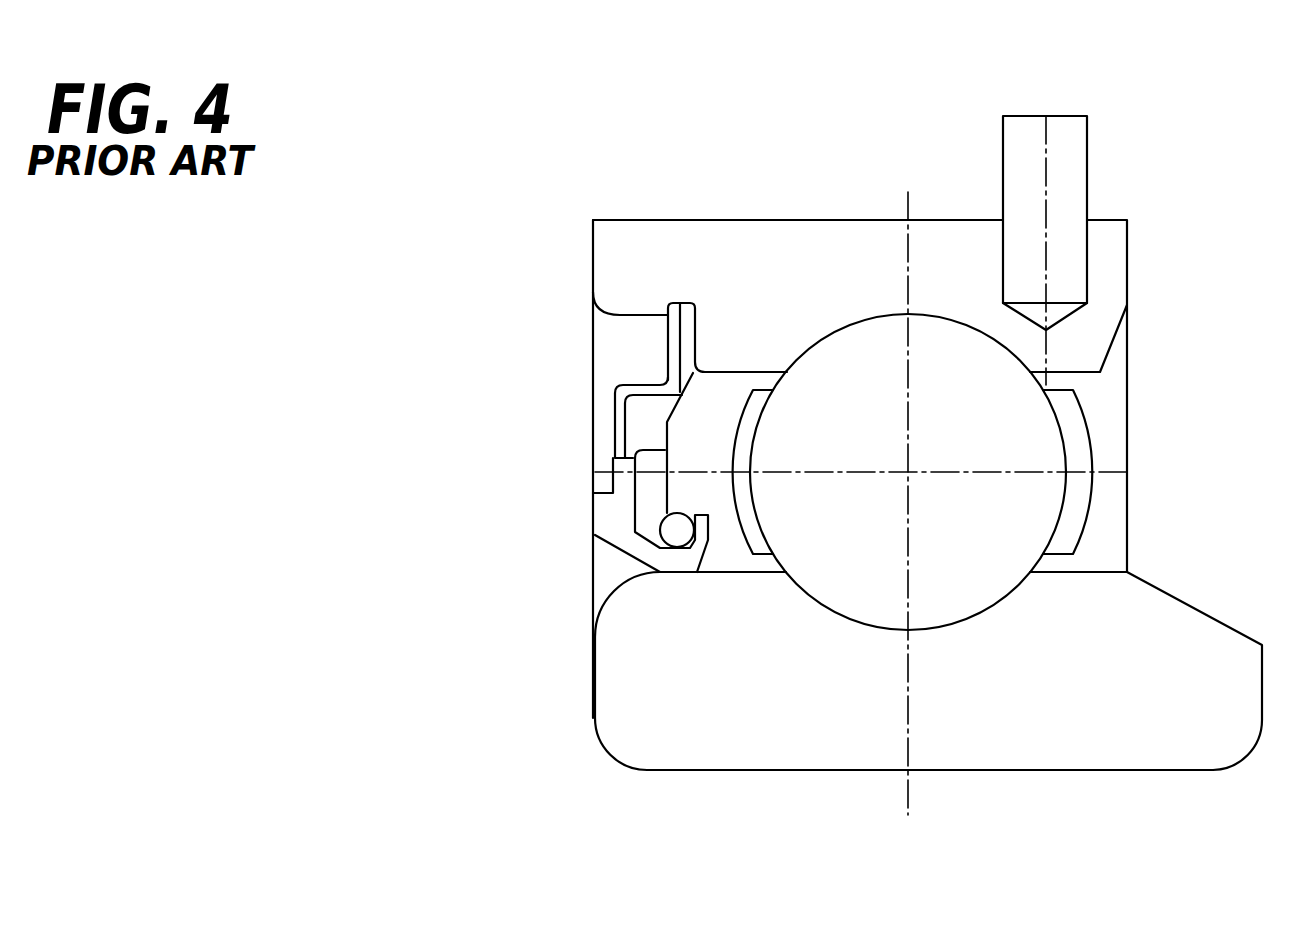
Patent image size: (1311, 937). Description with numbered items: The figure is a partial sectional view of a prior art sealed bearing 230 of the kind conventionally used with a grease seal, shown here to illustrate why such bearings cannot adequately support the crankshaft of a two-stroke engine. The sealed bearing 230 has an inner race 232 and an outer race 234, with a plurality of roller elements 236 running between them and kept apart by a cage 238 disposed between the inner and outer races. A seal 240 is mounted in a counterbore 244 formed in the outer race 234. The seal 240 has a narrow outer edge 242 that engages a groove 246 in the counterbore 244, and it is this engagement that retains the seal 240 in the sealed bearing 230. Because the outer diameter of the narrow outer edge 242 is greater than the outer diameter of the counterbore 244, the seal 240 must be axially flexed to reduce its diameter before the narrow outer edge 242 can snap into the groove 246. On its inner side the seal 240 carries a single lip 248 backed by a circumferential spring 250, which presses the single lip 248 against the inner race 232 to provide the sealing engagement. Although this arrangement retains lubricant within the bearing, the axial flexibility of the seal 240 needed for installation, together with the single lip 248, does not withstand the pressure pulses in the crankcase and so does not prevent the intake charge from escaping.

The sealed bearing 230 is at (748, 158).
The inner race 232 is at (623, 697).
The outer race 234 is at (620, 259).
The roller elements 236 is at (862, 540).
The cage 238 is at (747, 445).
The seal 240 is at (618, 427).
The narrow outer edge 242 is at (683, 357).
The counterbore 244 is at (625, 317).
The groove 246 is at (680, 303).
The single lip 248 is at (678, 562).
The circumferential spring 250 is at (695, 490).